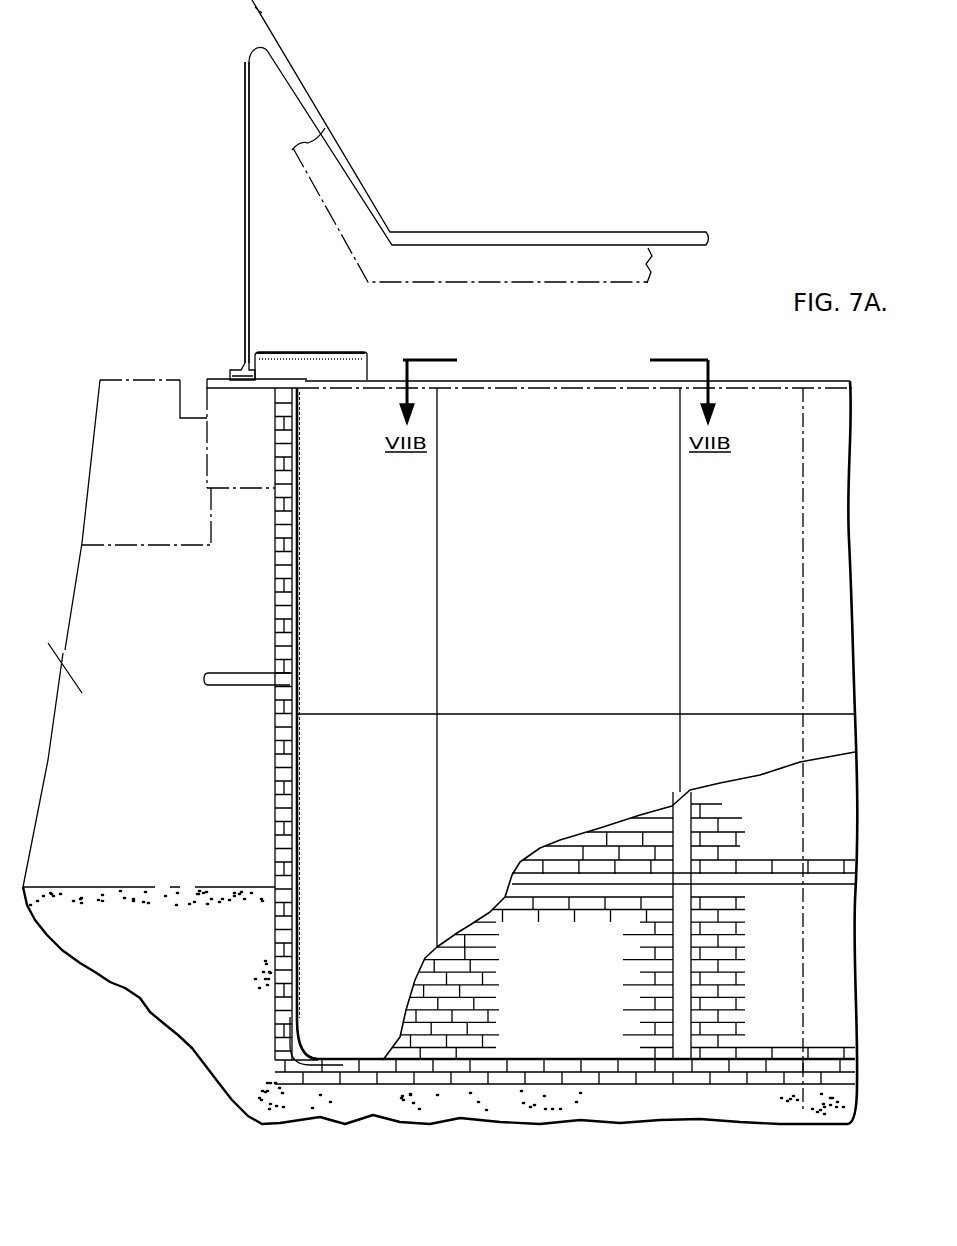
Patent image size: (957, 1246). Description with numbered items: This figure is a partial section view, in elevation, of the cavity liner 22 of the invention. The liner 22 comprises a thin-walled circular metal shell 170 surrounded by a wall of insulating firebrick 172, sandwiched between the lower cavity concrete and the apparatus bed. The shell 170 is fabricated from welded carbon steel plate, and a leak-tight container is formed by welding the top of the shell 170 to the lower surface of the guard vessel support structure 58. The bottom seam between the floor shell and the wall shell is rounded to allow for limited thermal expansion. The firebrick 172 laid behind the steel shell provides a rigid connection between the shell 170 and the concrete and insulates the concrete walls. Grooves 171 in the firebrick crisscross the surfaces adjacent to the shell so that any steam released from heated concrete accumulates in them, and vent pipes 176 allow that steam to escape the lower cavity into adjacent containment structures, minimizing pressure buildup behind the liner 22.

The liner 22 is at (227, 986).
The guard vessel support structure 58 is at (223, 378).
The shell 170 is at (300, 866).
The grooves 171 is at (572, 877).
The firebrick insulation 172 is at (288, 803).
The vent pipes 176 is at (245, 686).